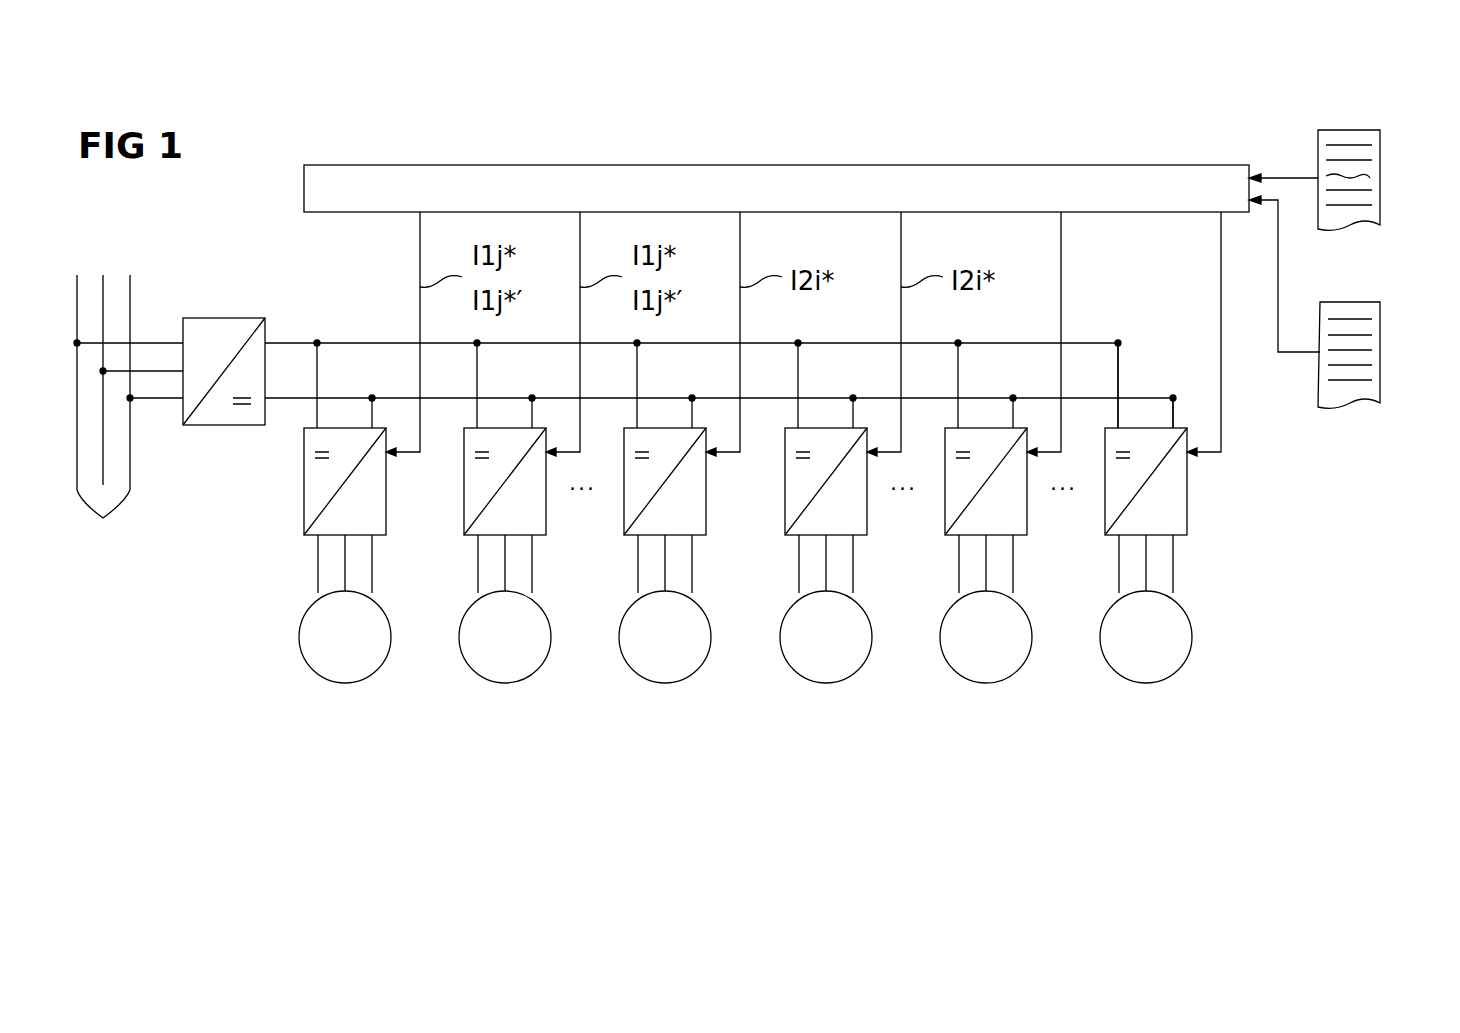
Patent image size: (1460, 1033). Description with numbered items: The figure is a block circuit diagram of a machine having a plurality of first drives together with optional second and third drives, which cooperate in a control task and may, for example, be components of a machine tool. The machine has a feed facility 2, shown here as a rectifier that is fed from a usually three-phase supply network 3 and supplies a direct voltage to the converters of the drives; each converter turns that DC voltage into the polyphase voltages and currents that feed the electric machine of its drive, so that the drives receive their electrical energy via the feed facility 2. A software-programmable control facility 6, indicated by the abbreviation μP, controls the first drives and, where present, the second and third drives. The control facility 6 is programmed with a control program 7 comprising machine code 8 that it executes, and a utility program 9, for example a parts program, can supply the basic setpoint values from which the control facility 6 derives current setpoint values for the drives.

The feed facility 2 is at (225, 425).
The supply network 3 is at (128, 415).
The control facility 6 is at (304, 188).
The control program 7 is at (1380, 152).
The machine code 8 is at (1370, 178).
The utility program 9 is at (1380, 325).